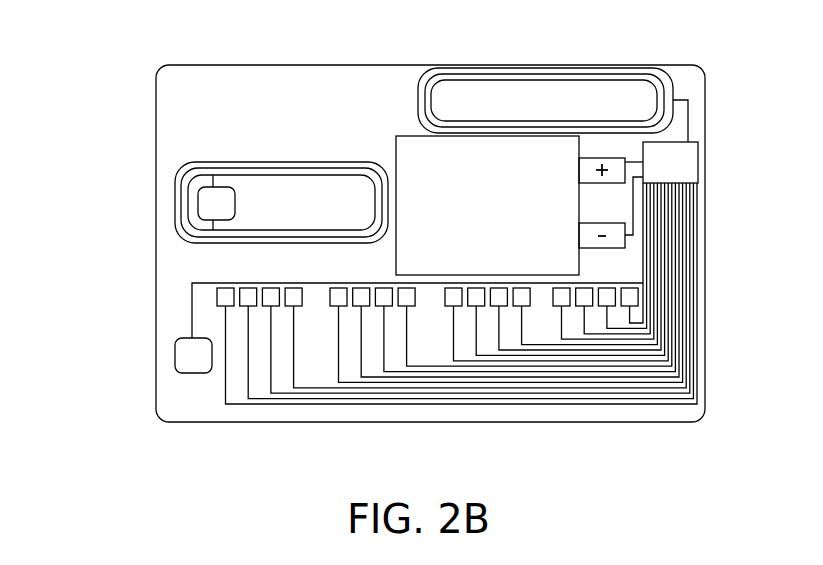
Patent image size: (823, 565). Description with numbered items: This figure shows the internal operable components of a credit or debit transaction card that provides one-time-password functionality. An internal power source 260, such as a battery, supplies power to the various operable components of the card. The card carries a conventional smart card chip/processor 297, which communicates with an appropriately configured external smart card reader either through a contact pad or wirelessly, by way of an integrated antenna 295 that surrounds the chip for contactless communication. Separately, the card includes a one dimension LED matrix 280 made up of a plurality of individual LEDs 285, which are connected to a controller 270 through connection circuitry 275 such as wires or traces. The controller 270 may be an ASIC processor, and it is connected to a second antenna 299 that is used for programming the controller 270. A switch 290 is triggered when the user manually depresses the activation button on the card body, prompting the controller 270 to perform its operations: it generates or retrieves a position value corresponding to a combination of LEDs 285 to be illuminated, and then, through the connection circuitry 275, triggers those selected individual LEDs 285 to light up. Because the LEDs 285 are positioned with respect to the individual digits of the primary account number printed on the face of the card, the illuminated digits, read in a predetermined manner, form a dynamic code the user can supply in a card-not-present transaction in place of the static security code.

The internal power source 260 is at (408, 147).
The controller 270 is at (693, 153).
The connection circuitry 275 is at (698, 263).
The one dimension LED matrix 280 is at (213, 297).
The individual LEDs 285 is at (327, 283).
The switch 290 is at (175, 355).
The integrated antenna 295 is at (199, 163).
The smart card chip/processor 297 is at (198, 203).
The second antenna 299 is at (522, 73).